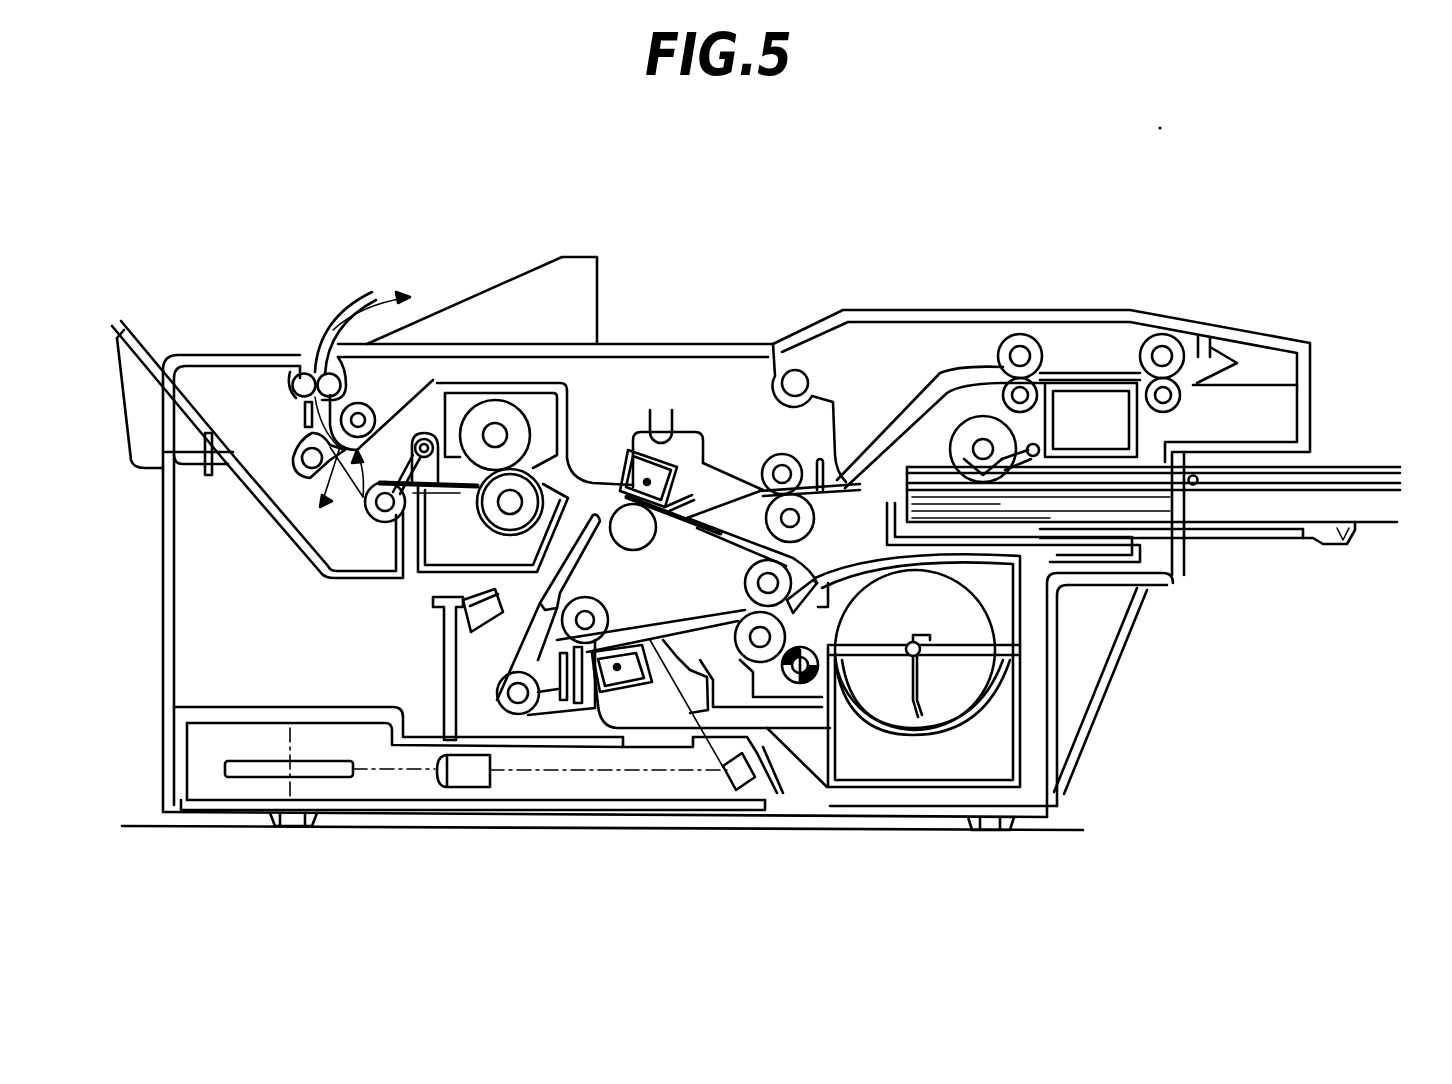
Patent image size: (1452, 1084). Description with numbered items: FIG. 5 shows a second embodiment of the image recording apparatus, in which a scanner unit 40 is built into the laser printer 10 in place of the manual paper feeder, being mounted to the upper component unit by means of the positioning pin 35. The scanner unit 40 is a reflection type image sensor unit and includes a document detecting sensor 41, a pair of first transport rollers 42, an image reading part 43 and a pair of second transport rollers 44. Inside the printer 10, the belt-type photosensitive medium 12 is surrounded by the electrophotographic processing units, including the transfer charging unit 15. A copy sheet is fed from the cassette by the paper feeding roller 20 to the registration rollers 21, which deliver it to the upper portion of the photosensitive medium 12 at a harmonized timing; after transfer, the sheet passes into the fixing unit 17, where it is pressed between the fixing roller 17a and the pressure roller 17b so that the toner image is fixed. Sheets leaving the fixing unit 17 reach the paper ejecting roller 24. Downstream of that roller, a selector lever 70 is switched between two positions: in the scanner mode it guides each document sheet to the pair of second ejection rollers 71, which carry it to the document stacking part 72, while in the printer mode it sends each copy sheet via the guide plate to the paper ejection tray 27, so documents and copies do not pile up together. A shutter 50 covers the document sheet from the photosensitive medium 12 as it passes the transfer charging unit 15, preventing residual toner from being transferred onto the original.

The laser printer 10 is at (838, 218).
The photosensitive medium 12 is at (625, 640).
The transfer charging unit 15 is at (626, 450).
The fixing unit 17 is at (627, 205).
The fixing roller 17a is at (508, 467).
The pressure roller 17b is at (540, 453).
The paper feeding roller 20 is at (980, 423).
The registration rollers 21 is at (782, 497).
The paper ejecting roller 24 is at (378, 522).
The paper ejection tray 27 is at (121, 326).
The positioning pin 35 is at (803, 384).
The scanner unit 40 is at (1273, 300).
The document detecting sensor 41 is at (1187, 377).
The first transport rollers 42 is at (1167, 343).
The image reading part 43 is at (1092, 374).
The exit roller pair 44 is at (1037, 340).
The shutter 50 is at (665, 531).
The selector lever 70 is at (323, 507).
The second ejection rollers 71 is at (330, 364).
The document stacking part 72 is at (478, 290).